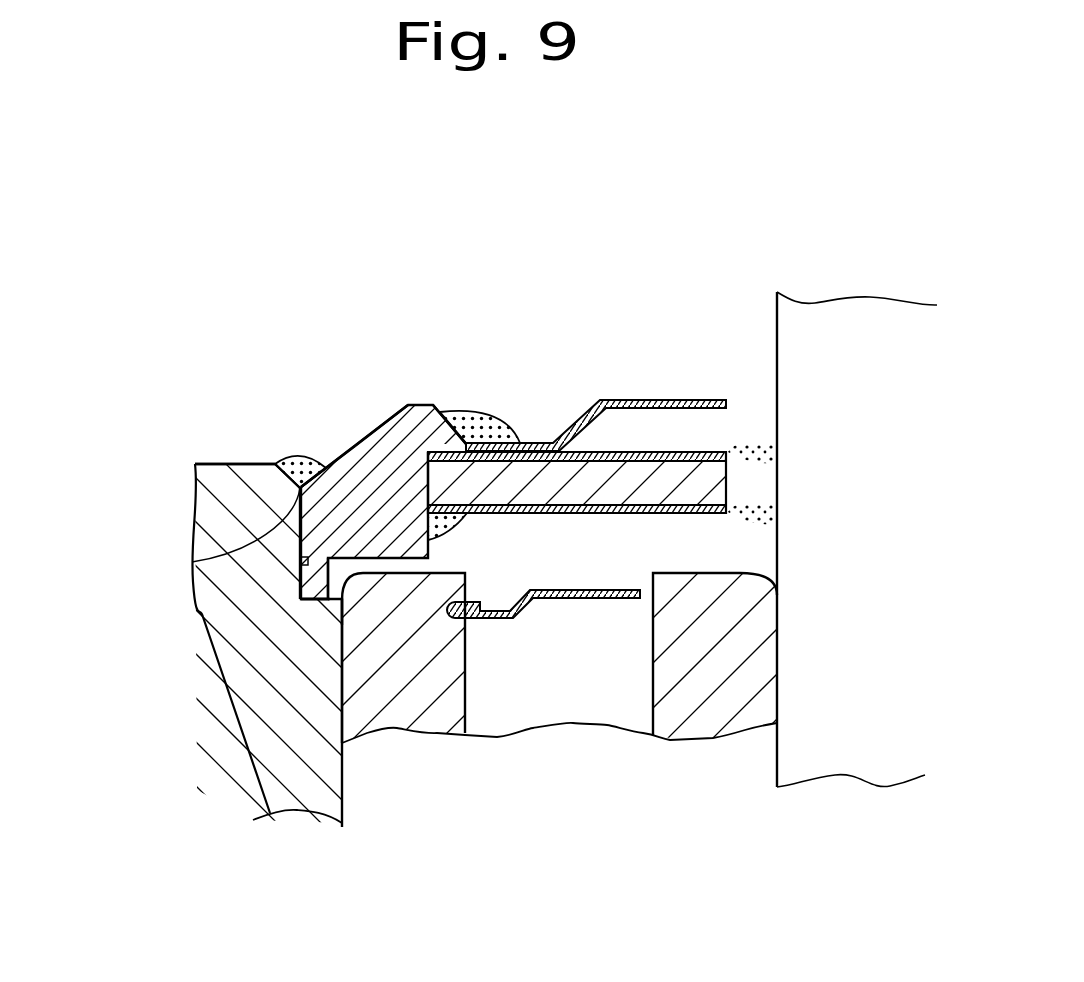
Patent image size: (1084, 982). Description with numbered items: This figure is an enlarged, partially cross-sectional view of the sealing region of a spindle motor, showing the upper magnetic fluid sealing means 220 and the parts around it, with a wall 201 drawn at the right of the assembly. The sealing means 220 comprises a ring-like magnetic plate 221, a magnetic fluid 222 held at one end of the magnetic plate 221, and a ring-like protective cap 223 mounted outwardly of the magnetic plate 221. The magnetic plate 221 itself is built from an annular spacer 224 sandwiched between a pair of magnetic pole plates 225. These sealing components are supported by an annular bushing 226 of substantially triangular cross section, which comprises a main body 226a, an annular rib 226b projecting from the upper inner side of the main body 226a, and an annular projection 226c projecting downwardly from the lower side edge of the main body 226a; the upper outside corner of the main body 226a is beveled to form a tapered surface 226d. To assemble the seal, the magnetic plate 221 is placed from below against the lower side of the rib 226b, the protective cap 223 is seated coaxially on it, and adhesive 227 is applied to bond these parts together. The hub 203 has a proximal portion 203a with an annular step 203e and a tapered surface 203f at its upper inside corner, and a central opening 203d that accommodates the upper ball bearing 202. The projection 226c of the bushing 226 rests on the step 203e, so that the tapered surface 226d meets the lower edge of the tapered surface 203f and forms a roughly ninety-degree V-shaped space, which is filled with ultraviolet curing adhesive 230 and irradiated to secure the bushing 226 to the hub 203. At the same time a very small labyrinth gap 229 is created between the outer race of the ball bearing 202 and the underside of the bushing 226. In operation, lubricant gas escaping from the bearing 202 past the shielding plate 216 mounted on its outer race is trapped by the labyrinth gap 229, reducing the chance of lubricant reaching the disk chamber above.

The casing wall 201 is at (838, 330).
The upper ball bearing 202 is at (705, 720).
The hub 203 is at (245, 807).
The proximal portion 203a is at (217, 508).
The opening 203d is at (305, 599).
The annular step 203e is at (317, 598).
The tapered surface 203f is at (300, 561).
The shielding plate 216 is at (548, 598).
The upper magnetic fluid sealing means 220 is at (659, 421).
The magnetic plate 221 is at (662, 428).
The magnetic fluid 222 is at (755, 446).
The protective cap 223 is at (603, 400).
The annular spacer 224 is at (710, 488).
The magnetic pole plates 225 is at (730, 463).
The annular bushing 226 is at (389, 586).
The main body 226a is at (375, 443).
The annular rib 226b is at (435, 407).
The annular projection 226c is at (316, 588).
The tapered surface 226d is at (342, 457).
The adhesive 227 is at (497, 460).
The labyrinth gap 229 is at (403, 567).
The ultraviolet curing adhesive 230 is at (292, 457).